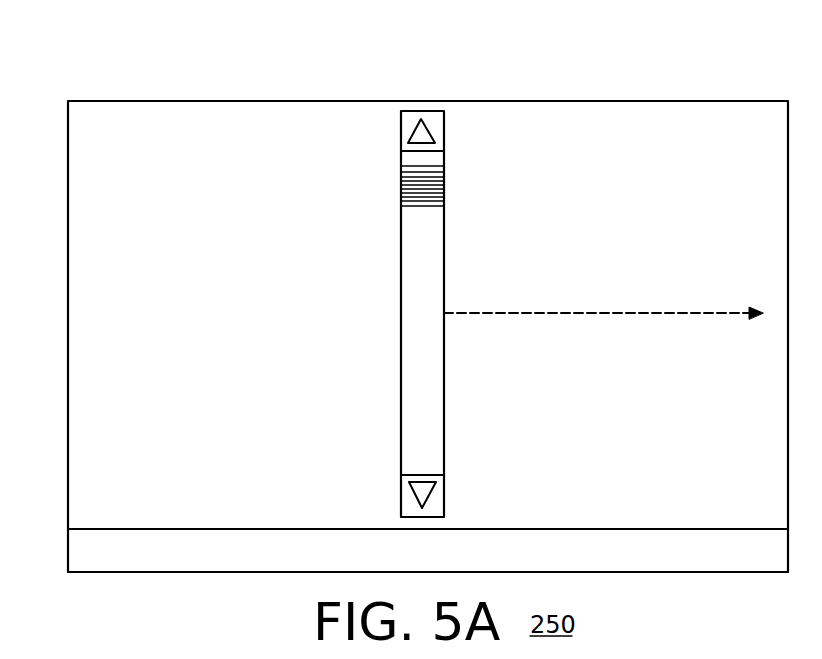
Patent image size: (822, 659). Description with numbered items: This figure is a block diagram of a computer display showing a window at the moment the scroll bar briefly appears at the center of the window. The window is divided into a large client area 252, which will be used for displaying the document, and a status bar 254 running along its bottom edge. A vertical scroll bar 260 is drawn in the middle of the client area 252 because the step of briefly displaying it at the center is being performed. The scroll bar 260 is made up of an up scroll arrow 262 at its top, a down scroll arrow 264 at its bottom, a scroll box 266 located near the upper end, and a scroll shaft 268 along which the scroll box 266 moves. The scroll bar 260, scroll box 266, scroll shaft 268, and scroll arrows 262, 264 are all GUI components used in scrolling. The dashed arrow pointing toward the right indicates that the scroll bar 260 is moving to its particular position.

The client area 252 is at (785, 81).
The status bar 254 is at (68, 553).
The scroll bar 260 is at (372, 516).
The up scroll arrow 262 is at (435, 125).
The down scroll arrow 264 is at (430, 498).
The scroll box 266 is at (434, 181).
The scroll shaft 268 is at (444, 280).